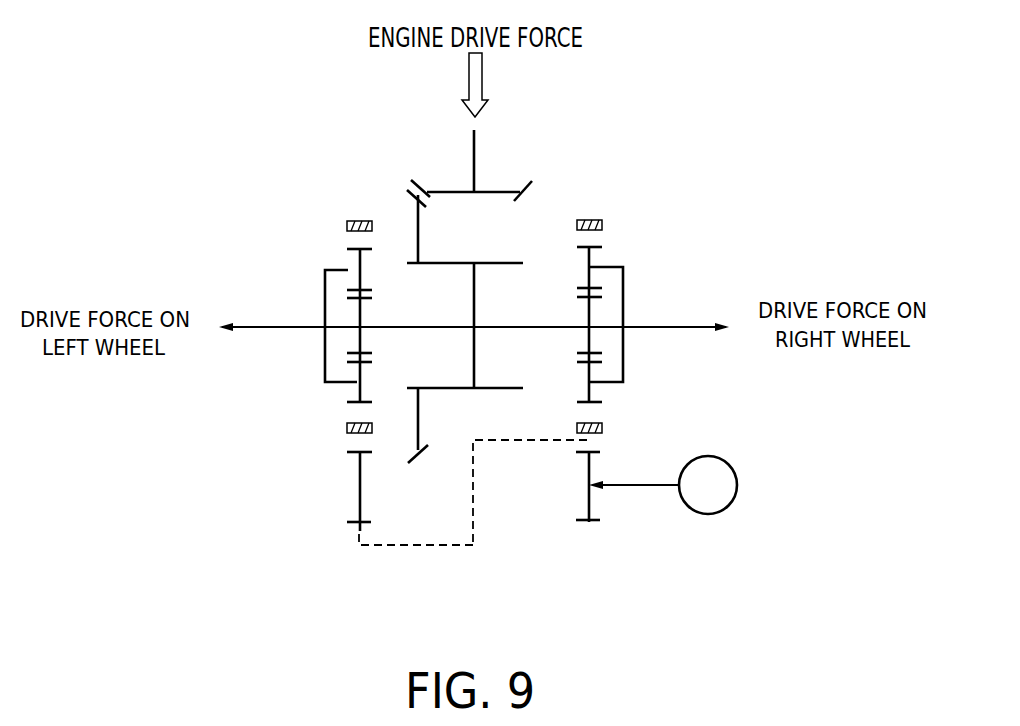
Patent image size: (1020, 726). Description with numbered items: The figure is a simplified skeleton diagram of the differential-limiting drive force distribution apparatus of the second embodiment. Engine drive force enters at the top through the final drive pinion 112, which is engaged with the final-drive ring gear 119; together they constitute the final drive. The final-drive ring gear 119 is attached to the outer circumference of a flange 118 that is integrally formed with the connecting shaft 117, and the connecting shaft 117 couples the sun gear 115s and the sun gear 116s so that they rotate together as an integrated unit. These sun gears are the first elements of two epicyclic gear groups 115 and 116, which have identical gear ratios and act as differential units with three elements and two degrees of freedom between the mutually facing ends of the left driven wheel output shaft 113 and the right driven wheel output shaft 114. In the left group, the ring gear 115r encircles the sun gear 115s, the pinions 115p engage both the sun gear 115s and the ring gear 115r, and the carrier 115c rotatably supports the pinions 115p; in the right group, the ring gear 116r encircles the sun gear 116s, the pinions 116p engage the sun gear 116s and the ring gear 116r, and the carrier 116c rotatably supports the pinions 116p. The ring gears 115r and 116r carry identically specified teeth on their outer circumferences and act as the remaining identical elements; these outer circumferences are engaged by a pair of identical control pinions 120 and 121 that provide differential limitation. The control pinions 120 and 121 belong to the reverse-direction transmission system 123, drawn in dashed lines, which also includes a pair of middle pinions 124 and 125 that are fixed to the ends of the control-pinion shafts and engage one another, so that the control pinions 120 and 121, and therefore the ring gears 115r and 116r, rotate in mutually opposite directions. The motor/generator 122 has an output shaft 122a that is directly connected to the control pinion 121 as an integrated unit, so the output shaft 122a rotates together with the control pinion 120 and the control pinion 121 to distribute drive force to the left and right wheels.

The final drive pinion 112 is at (533, 186).
The left driven wheel output shaft 113 is at (270, 323).
The right driven wheel output shaft 114 is at (673, 323).
The epicyclic gear group 115 is at (360, 204).
The pinions 115p is at (363, 282).
The sun gear 115s is at (360, 342).
The carrier 115c is at (323, 367).
The ring gear 115r is at (347, 427).
The epicyclic gear group 116 is at (601, 205).
The pinions 116p is at (590, 257).
The sun gear 116s is at (585, 308).
The carrier 116c is at (625, 355).
The ring gear 116r is at (602, 420).
The connecting shaft 117 is at (523, 328).
The flange 118 is at (473, 305).
The final-drive ring gear 119 is at (418, 235).
The control pinion 120 is at (352, 523).
The control pinion 121 is at (593, 523).
The motor/generator 122 is at (738, 485).
The output shaft 122a is at (643, 487).
The reverse-direction transmission system 123 is at (473, 519).
The middle pinion 124 is at (530, 492).
The middle pinion 125 is at (422, 547).